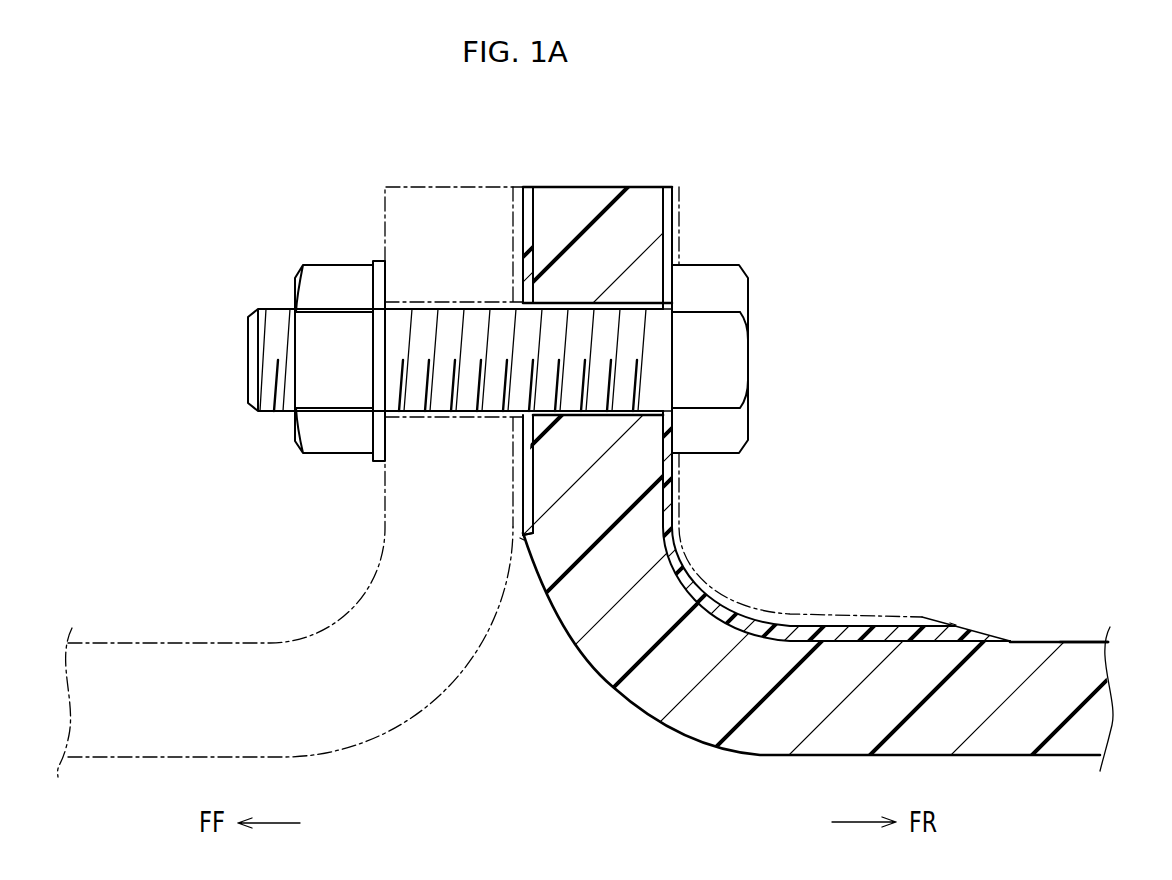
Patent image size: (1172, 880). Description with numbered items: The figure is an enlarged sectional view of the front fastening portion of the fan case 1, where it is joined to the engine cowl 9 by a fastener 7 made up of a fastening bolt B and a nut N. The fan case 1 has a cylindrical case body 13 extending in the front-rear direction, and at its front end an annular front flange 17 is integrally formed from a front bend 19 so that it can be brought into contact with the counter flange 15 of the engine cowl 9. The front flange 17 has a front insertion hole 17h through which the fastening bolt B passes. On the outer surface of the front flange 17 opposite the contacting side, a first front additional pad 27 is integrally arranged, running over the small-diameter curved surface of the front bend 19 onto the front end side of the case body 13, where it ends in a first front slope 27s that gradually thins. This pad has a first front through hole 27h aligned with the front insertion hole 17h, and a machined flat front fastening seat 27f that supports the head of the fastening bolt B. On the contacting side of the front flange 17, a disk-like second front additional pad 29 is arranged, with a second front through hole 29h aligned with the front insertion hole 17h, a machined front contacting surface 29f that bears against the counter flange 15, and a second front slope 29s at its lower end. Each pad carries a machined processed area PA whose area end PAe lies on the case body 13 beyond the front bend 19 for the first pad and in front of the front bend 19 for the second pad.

The fan case 1 is at (1085, 641).
The fastener 7 is at (300, 270).
The engine cowl 9 is at (144, 641).
The case body 13 is at (1035, 660).
The counter flange 15 is at (425, 188).
The front flange 17 is at (601, 196).
The front insertion hole 17h is at (590, 414).
The front bend 19 is at (638, 698).
The first front additional pad 27 is at (689, 574).
The front fastening seat 27f is at (673, 278).
The first front through hole 27h is at (673, 402).
The first front slope 27s is at (1000, 639).
The second front additional pad 29 is at (533, 190).
The front contacting surface 29f is at (522, 275).
The second front through hole 29h is at (518, 400).
The second front slope 29s is at (532, 547).
The fastening bolt B is at (747, 352).
The nut N is at (348, 264).
The processed area PA is at (512, 290).
The area end PAe is at (521, 539).